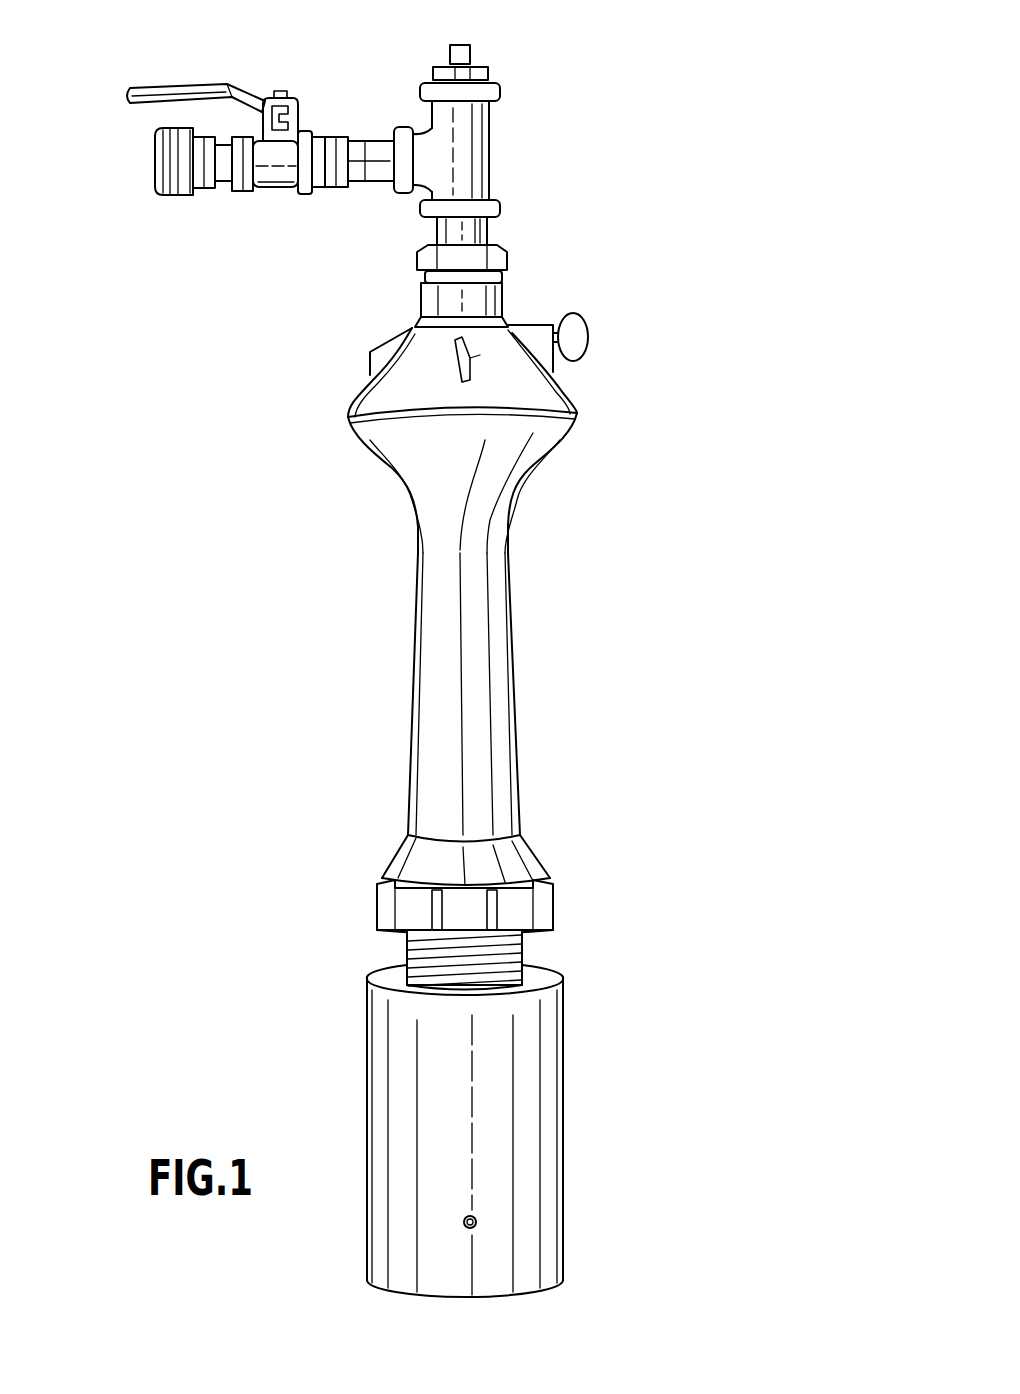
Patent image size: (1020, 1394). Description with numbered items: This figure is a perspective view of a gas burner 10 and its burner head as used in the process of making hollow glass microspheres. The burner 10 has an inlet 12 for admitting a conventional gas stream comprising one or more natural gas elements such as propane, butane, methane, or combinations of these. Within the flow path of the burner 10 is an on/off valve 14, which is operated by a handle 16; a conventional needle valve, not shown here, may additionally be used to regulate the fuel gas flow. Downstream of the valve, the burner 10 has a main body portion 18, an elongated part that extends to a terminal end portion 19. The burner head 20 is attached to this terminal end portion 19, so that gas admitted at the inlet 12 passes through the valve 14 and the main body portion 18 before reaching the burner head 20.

The gas burner 10 is at (615, 568).
The inlet 12 is at (150, 157).
The on/off valve 14 is at (293, 107).
The handle 16 is at (127, 93).
The main body portion 18 is at (483, 700).
The terminal end portion 19 is at (543, 963).
The burner head 20 is at (527, 1146).